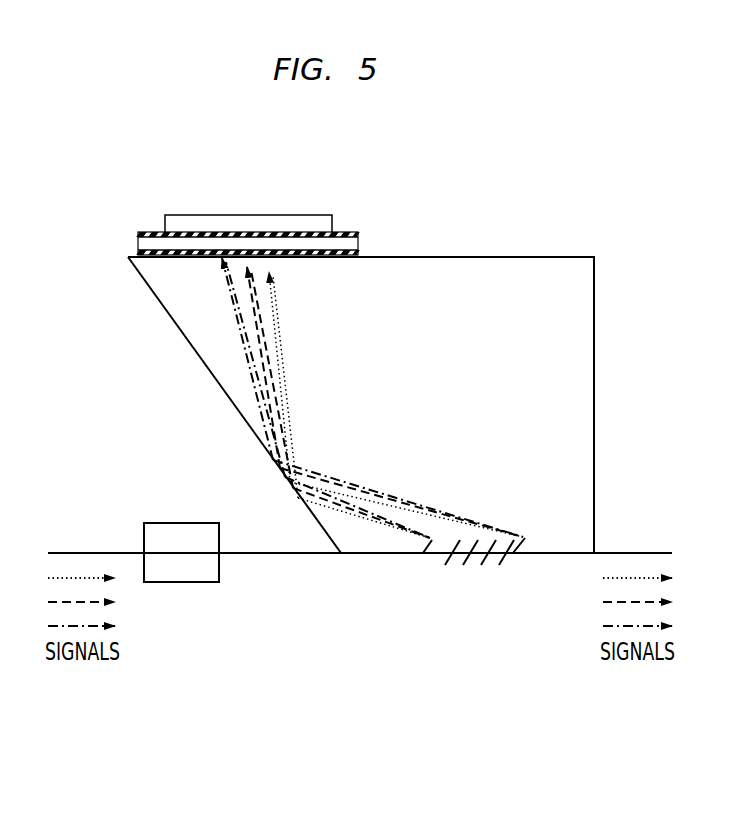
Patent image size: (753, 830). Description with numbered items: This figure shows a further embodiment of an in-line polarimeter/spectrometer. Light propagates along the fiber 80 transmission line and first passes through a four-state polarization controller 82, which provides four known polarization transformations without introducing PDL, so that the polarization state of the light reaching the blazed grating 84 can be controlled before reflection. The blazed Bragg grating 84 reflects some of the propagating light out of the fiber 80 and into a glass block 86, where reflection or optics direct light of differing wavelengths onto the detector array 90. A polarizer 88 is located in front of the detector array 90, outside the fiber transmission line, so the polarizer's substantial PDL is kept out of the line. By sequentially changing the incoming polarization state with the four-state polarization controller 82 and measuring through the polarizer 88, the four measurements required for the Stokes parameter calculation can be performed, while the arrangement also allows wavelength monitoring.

The fiber 80 is at (300, 555).
The 4-state polarization controller 82 is at (193, 583).
The blazed grating 84 is at (423, 556).
The glass block 86 is at (595, 355).
The polarizer 88 is at (139, 243).
The detector array 90 is at (165, 226).